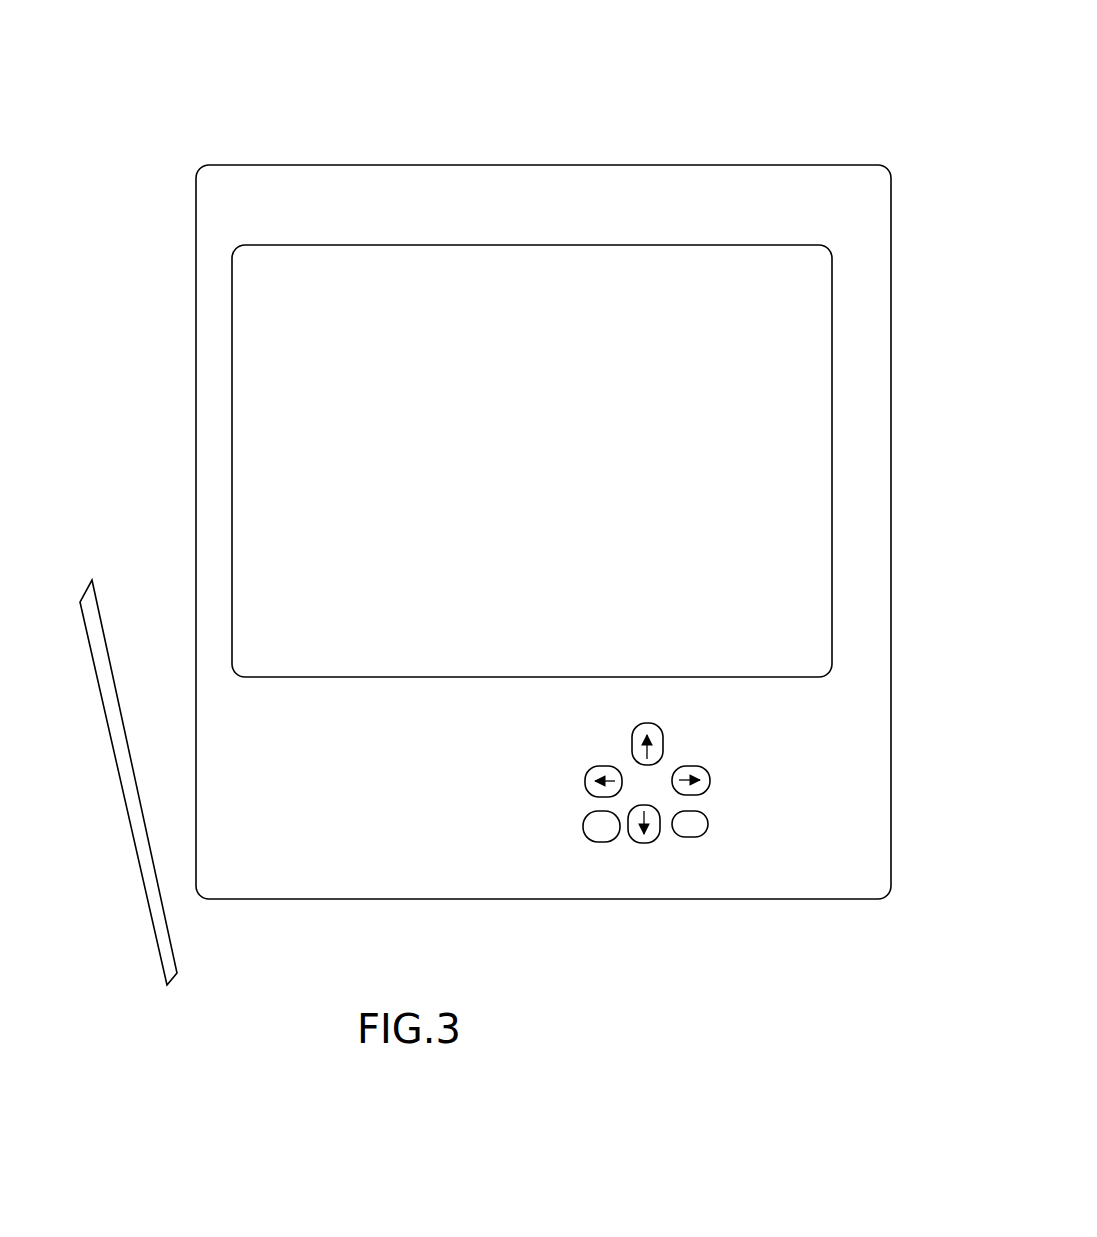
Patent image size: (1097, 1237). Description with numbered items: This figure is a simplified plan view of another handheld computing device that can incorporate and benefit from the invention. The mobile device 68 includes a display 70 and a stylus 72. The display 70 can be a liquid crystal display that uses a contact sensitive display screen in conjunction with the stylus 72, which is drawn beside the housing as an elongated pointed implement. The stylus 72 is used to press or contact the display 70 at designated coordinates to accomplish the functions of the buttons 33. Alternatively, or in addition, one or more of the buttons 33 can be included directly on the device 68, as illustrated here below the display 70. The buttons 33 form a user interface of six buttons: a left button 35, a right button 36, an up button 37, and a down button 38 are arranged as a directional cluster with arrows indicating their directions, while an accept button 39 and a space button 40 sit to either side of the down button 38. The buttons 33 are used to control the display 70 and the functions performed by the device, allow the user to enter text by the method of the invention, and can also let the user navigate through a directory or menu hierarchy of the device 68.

The mobile device 68 is at (692, 138).
The display 70 is at (356, 297).
The stylus 72 is at (156, 876).
The buttons 33 is at (659, 852).
The up button 37 is at (645, 723).
The left button 35 is at (585, 783).
The right button 36 is at (710, 778).
The down button 38 is at (642, 843).
The accept button 39 is at (708, 827).
The space button 40 is at (583, 818).